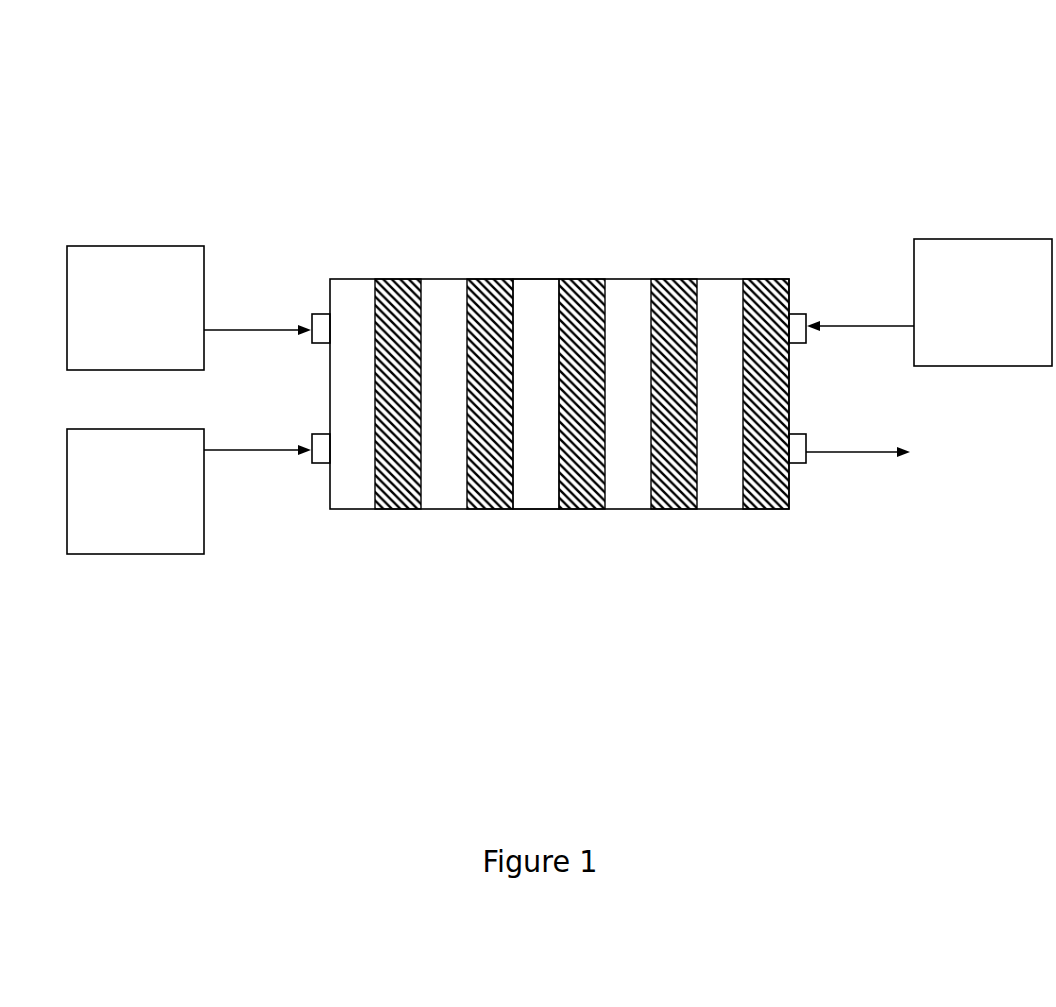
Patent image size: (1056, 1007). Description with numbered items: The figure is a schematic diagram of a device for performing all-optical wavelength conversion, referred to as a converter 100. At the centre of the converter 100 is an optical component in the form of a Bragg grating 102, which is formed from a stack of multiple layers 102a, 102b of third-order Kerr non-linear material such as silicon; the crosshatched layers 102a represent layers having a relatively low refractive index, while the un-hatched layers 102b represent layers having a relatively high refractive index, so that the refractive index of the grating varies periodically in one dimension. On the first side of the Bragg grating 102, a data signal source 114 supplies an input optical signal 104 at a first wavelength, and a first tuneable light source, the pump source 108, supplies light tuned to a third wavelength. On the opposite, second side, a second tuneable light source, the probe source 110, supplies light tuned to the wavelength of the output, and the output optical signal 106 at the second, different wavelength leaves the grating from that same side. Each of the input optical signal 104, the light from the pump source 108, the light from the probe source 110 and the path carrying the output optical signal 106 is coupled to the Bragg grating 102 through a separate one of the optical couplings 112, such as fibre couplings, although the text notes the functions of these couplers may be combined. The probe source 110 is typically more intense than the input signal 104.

The converter 100 is at (3, 48).
The Bragg grating 102 is at (559, 388).
The crosshatched layers 102a is at (497, 510).
The un-hatched layers 102b is at (535, 510).
The input optical signal 104 is at (232, 254).
The output optical signal 106 is at (867, 508).
The pump source 108 is at (112, 555).
The probe source 110 is at (972, 240).
The optical couplings 112 is at (319, 308).
The data signal source 114 is at (112, 248).